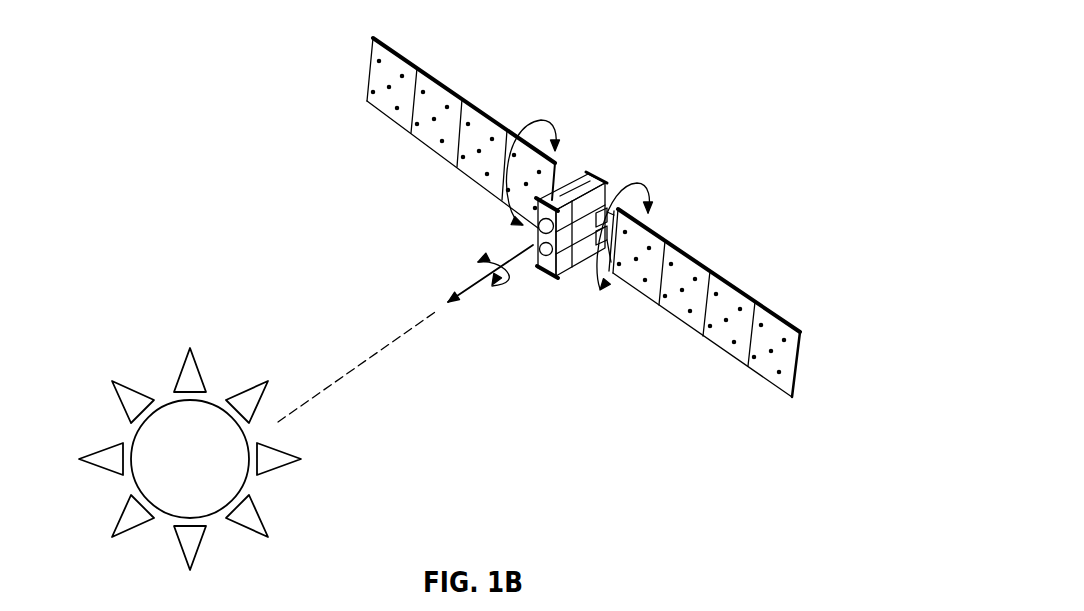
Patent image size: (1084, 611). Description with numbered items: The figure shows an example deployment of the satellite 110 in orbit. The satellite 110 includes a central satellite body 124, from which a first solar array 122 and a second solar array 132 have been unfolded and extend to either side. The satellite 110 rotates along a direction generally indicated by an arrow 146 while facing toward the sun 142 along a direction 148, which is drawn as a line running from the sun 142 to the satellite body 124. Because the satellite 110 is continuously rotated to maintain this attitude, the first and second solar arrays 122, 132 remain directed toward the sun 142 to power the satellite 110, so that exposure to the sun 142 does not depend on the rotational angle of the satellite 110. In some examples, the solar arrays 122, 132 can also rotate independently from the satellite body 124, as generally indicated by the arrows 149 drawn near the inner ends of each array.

The satellite 110 is at (666, 111).
The first solar array 122 is at (403, 97).
The satellite body 124 is at (587, 207).
The second solar array 132 is at (692, 300).
The sun 142 is at (163, 402).
The arrow 146 is at (497, 285).
The direction 148 is at (358, 365).
The arrows 149 is at (548, 121).